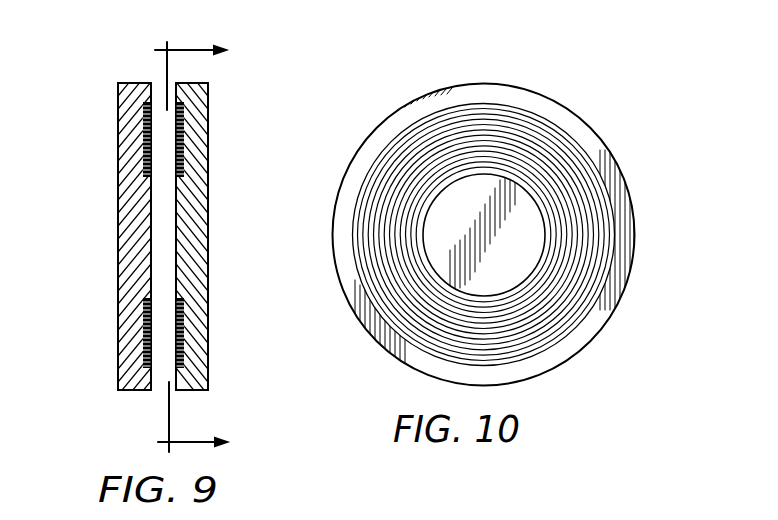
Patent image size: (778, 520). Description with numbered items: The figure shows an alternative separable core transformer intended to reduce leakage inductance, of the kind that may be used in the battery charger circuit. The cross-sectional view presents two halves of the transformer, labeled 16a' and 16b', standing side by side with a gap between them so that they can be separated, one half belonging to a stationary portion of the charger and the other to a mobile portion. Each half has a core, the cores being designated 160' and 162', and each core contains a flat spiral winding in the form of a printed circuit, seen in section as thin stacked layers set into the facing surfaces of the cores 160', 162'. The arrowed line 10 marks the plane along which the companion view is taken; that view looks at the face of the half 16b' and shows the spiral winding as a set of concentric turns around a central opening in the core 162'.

In FIG. 9, the section line 10 is at (208, 247).
In FIG. 9, the first plate 16a' is at (97, 233).
In FIG. 9, the second plate 16b' is at (232, 233).
In FIG. 10, the second plate 16b' is at (484, 212).
In FIG. 9, the core 160' is at (95, 238).
In FIG. 9, the core 162' is at (224, 225).
In FIG. 10, the core 162' is at (548, 225).